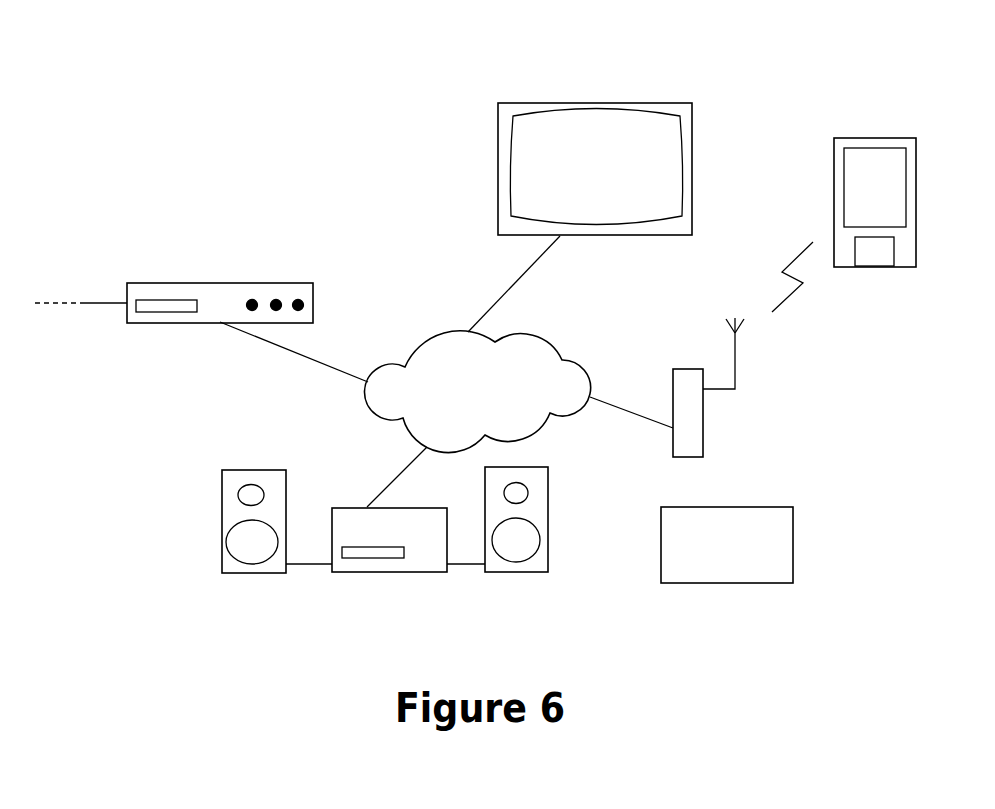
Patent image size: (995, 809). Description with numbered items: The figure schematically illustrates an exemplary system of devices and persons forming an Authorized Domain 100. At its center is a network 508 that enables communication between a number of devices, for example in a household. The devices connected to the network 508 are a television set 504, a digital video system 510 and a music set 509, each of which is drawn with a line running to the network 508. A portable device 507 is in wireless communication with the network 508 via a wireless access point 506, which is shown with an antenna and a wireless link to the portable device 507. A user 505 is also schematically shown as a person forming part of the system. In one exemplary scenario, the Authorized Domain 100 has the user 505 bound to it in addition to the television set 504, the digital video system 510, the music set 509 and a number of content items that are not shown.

The Authorized Domain 100 is at (272, 67).
The television set 504 is at (652, 103).
The user 505 is at (699, 585).
The wireless access point 506 is at (692, 369).
The portable device 507 is at (896, 138).
The network 508 is at (447, 331).
The music set 509 is at (422, 575).
The digital video system 510 is at (216, 283).